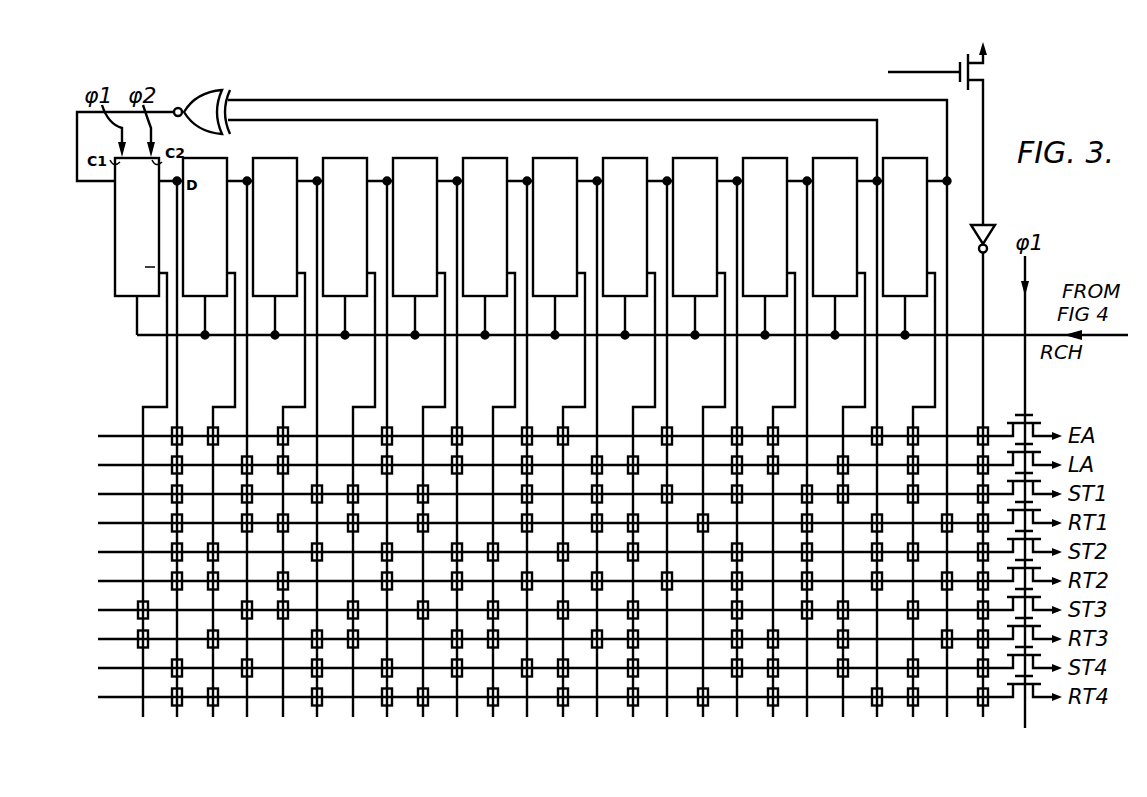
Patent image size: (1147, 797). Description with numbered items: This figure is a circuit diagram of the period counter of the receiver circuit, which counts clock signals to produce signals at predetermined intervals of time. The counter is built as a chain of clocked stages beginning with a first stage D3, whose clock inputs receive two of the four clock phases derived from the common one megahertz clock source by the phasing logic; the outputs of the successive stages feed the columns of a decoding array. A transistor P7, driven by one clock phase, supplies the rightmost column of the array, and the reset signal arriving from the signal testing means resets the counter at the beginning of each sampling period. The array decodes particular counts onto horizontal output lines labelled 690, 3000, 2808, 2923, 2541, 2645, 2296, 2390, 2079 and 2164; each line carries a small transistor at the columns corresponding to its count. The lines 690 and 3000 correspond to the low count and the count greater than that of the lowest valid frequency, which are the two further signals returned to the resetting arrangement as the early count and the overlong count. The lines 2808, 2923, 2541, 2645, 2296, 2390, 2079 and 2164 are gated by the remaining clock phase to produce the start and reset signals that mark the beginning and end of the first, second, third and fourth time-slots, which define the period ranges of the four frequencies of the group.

The first flip-flop stage of shift register D3 is at (137, 227).
The transistor P7 is at (986, 44).
The decoder output line 690 is at (520, 436).
The decoder output line 3000 is at (512, 465).
The decoder output line 2808 is at (512, 494).
The decoder output line 2923 is at (512, 523).
The decoder output line 2541 is at (512, 552).
The decoder output line 2645 is at (512, 581).
The decoder output line 2296 is at (512, 610).
The decoder output line 2390 is at (512, 639).
The decoder output line 2079 is at (512, 668).
The decoder output line 2164 is at (512, 697).